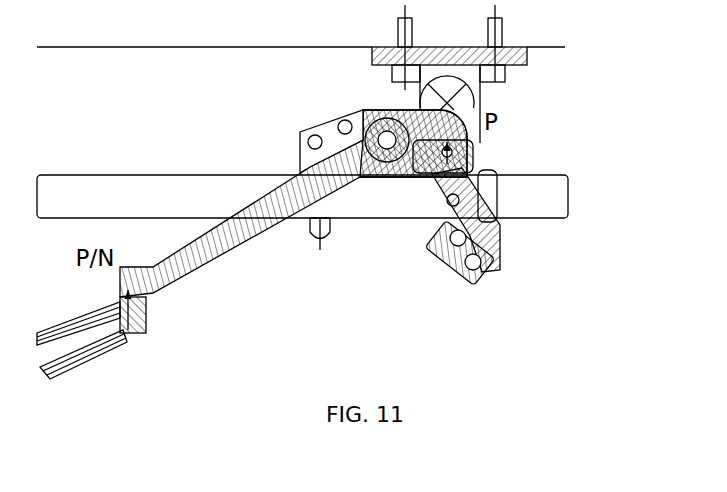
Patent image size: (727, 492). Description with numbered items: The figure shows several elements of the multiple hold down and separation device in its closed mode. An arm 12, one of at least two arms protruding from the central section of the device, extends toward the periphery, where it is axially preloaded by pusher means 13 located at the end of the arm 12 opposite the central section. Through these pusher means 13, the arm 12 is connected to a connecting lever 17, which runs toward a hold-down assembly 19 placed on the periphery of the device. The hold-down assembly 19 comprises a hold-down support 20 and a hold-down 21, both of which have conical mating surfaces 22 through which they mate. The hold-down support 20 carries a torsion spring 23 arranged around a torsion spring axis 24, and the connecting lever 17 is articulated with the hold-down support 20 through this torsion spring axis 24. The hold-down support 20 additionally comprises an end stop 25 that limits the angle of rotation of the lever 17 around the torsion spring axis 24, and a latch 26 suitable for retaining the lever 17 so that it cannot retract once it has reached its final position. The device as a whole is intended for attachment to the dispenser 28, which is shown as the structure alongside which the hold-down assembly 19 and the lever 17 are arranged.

The arm 12 is at (43, 375).
The pusher means 13 is at (128, 330).
The connecting lever 17 is at (257, 220).
The hold-down assembly 19 is at (499, 97).
The hold-down support 20 is at (483, 156).
The hold-down 21 is at (484, 90).
The conical mating surfaces 22 is at (460, 152).
The torsion spring 23 is at (290, 165).
The torsion spring axis 24 is at (387, 128).
The end stop 25 is at (427, 177).
The latch 26 is at (460, 270).
The dispenser 28 is at (558, 201).